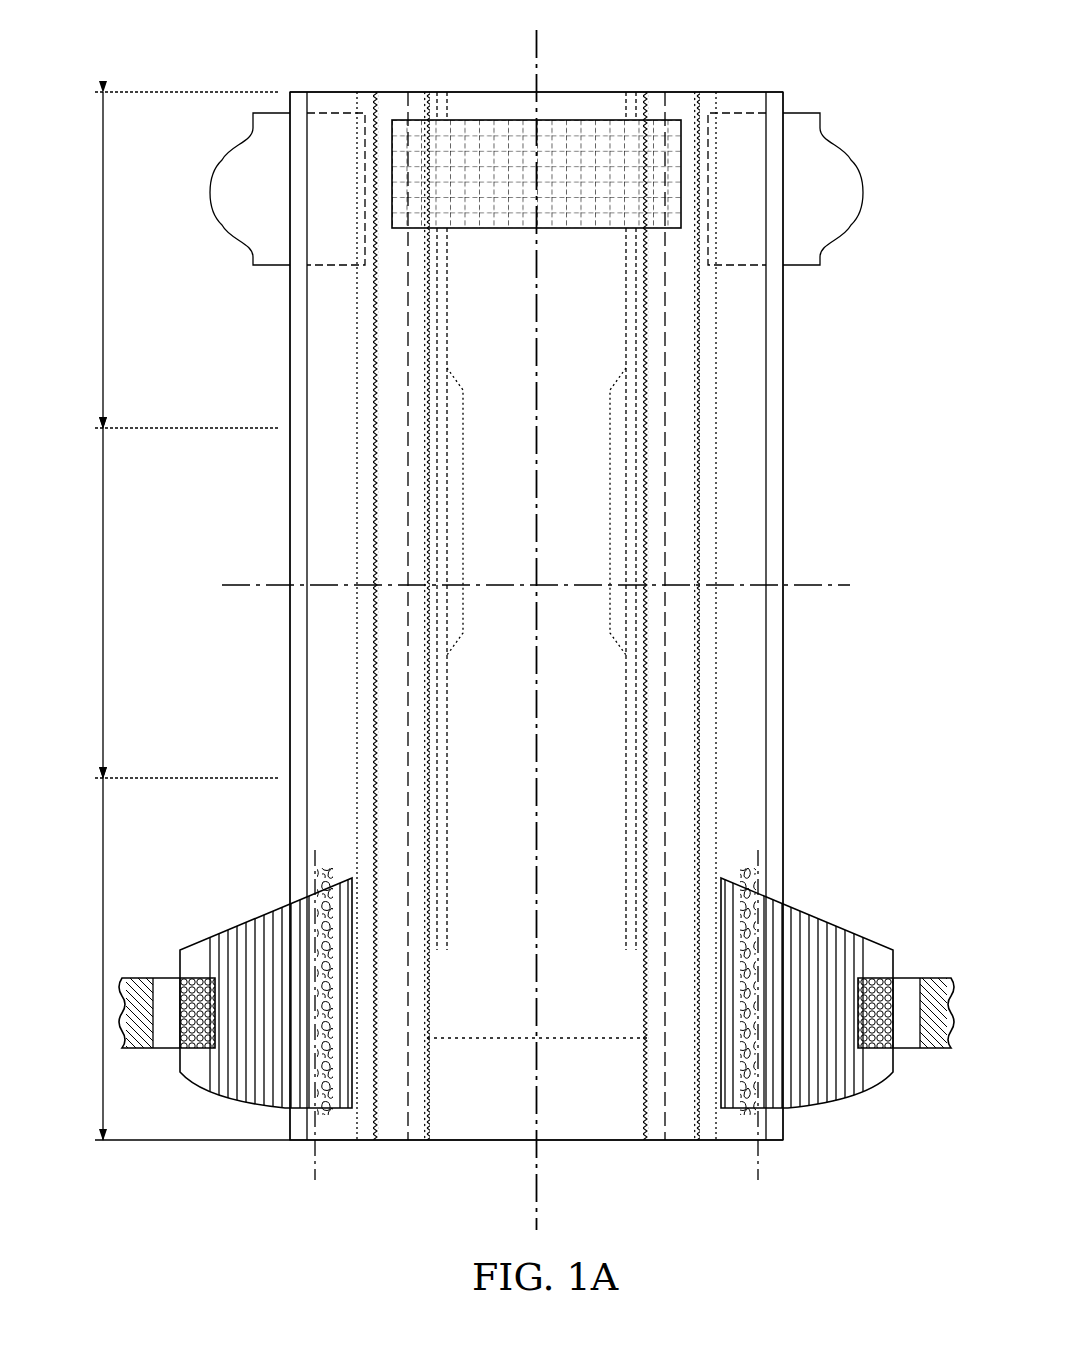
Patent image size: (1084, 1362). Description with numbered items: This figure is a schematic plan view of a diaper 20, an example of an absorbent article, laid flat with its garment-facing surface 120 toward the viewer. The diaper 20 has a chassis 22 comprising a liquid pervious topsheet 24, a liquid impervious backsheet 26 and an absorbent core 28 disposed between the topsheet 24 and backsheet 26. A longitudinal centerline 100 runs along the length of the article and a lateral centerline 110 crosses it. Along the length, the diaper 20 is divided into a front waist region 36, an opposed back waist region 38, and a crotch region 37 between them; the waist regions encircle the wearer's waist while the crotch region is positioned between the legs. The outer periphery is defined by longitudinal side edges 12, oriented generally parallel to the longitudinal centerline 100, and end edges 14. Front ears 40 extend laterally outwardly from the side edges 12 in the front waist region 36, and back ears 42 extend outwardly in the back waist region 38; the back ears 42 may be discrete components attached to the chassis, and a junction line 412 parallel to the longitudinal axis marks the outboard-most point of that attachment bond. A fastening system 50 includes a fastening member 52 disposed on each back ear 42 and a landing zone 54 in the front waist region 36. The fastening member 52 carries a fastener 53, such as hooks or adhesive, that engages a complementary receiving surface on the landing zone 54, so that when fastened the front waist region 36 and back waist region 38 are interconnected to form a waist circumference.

The diaper 20 is at (723, 62).
The longitudinal side edges 12 is at (290, 308).
The end edges 14 is at (585, 91).
The chassis 22 is at (322, 698).
The liquid pervious topsheet 24 is at (378, 518).
The liquid impervious backsheet 26 is at (322, 630).
The absorbent core 28 is at (463, 515).
The front waist region 36 is at (103, 258).
The crotch region 37 is at (103, 605).
The back waist region 38 is at (103, 985).
The front ears 40 is at (222, 188).
The back ears 42 is at (243, 913).
The fastening system 50 is at (150, 1057).
The fastening member 52 is at (170, 978).
The fastener 53 is at (140, 1049).
The landing zone 54 is at (610, 119).
The longitudinal centerline 100 is at (531, 42).
The lateral centerline 110 is at (252, 583).
The garment-facing surface 120 is at (513, 324).
The junction line 412 is at (312, 1170).